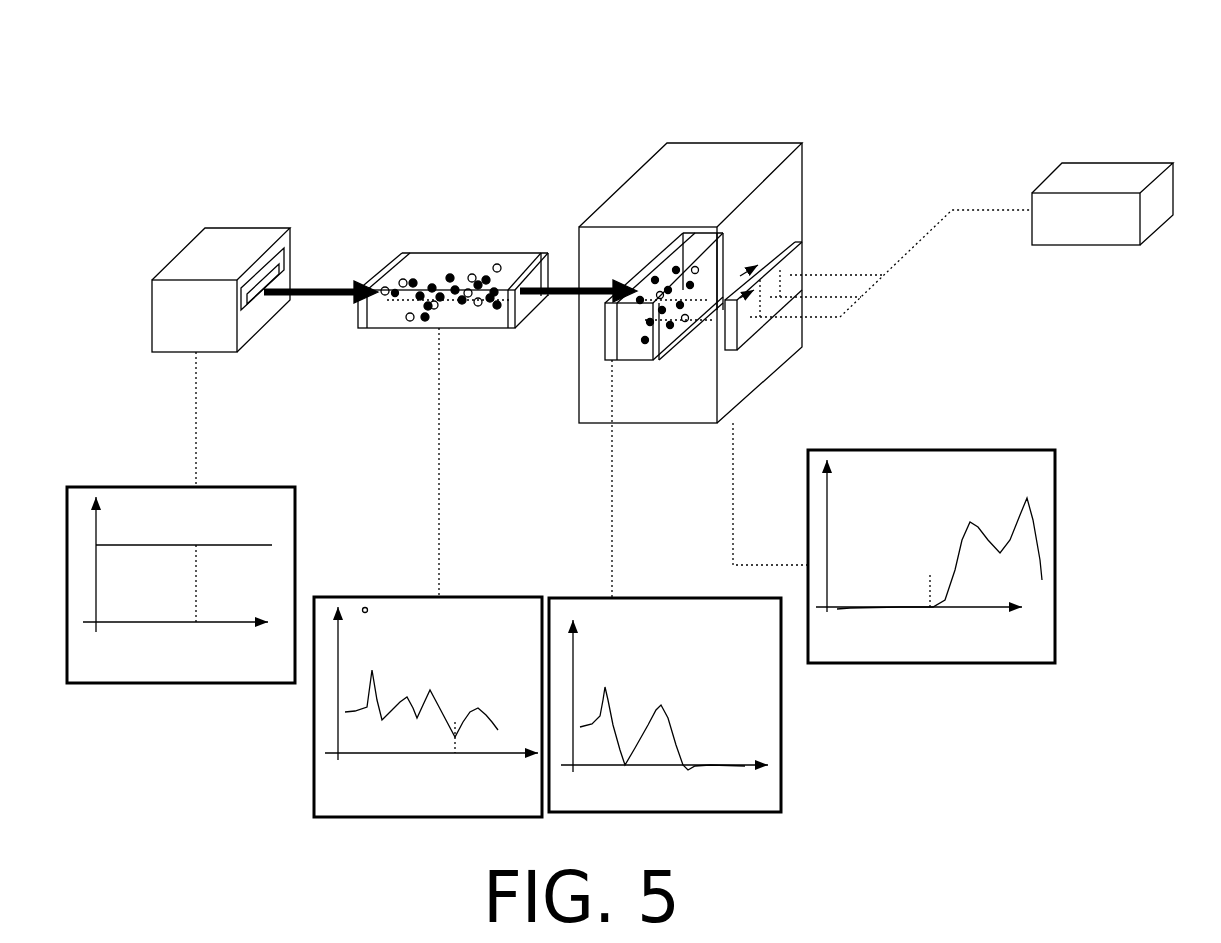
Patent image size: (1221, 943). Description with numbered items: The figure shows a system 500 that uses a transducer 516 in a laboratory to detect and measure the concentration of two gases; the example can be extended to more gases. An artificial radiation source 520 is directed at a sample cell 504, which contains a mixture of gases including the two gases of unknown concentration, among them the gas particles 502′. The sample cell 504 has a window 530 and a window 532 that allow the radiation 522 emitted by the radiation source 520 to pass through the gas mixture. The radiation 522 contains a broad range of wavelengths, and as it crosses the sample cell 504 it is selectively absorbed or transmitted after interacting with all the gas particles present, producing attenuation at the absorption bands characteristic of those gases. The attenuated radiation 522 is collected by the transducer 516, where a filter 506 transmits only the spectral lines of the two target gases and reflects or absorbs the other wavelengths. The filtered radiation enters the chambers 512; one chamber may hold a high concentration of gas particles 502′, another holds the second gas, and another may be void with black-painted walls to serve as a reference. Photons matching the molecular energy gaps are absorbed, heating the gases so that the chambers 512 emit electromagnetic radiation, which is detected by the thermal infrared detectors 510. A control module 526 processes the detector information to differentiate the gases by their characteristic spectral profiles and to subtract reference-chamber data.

The system 500 is at (210, 60).
The radiation source 520 is at (208, 256).
The radiation 522 is at (317, 303).
The window 530 is at (377, 257).
The sample cell 504 is at (431, 256).
The window 532 is at (541, 250).
The gas particles 502′ is at (410, 326).
The transducer 516 is at (772, 376).
The filter 506 is at (663, 248).
The chambers 512 is at (707, 232).
The thermal infrared detectors 510 is at (814, 254).
The control module 526 is at (1120, 158).